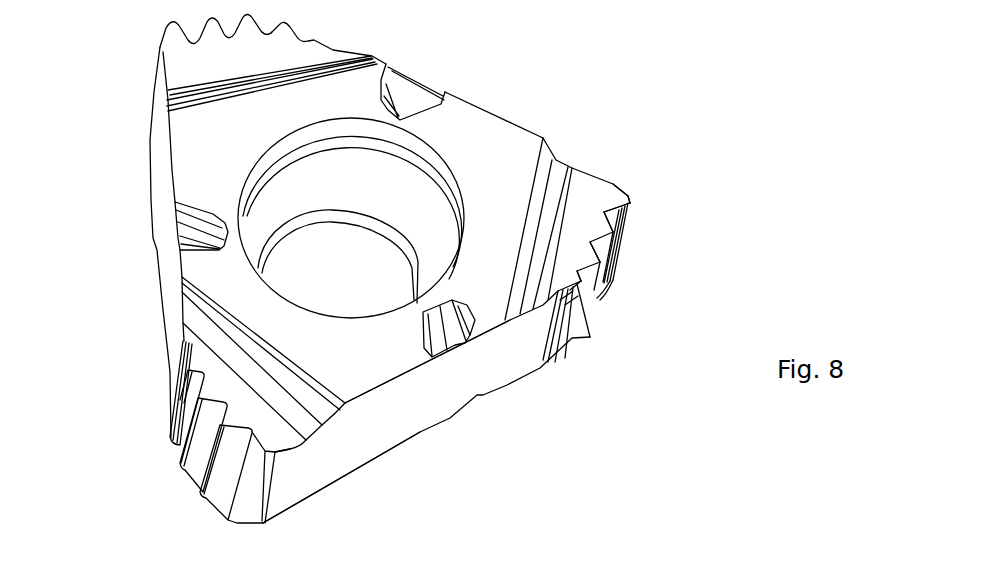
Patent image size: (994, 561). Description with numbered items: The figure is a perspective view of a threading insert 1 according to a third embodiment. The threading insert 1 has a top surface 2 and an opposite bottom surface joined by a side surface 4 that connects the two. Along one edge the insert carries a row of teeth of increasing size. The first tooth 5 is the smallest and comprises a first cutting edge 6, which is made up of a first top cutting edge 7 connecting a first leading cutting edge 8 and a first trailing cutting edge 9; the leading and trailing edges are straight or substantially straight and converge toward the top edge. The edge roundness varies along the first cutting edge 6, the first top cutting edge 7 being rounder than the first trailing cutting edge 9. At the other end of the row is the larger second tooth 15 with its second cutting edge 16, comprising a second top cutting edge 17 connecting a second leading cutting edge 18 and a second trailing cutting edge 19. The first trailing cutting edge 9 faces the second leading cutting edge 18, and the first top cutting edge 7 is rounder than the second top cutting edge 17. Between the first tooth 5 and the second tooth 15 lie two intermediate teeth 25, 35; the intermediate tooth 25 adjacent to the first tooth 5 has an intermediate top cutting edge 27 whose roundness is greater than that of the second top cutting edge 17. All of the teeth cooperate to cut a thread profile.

The threading insert 1 is at (683, 79).
The top surface 2 is at (203, 148).
The side surface 4 is at (453, 387).
The first tooth 5 is at (566, 311).
The first cutting edge 6 is at (577, 290).
The first top cutting edge 7 is at (578, 290).
The first leading cutting edge 8 is at (570, 293).
The first trailing cutting edge 9 is at (580, 278).
The second tooth 15 is at (607, 240).
The second cutting edge 16 is at (631, 202).
The second top cutting edge 17 is at (631, 204).
The second leading cutting edge 18 is at (612, 208).
The second trailing cutting edge 19 is at (629, 196).
The intermediate tooth 25 is at (580, 264).
The intermediate top cutting edge 27 is at (598, 265).
The intermediate tooth 35 is at (593, 249).